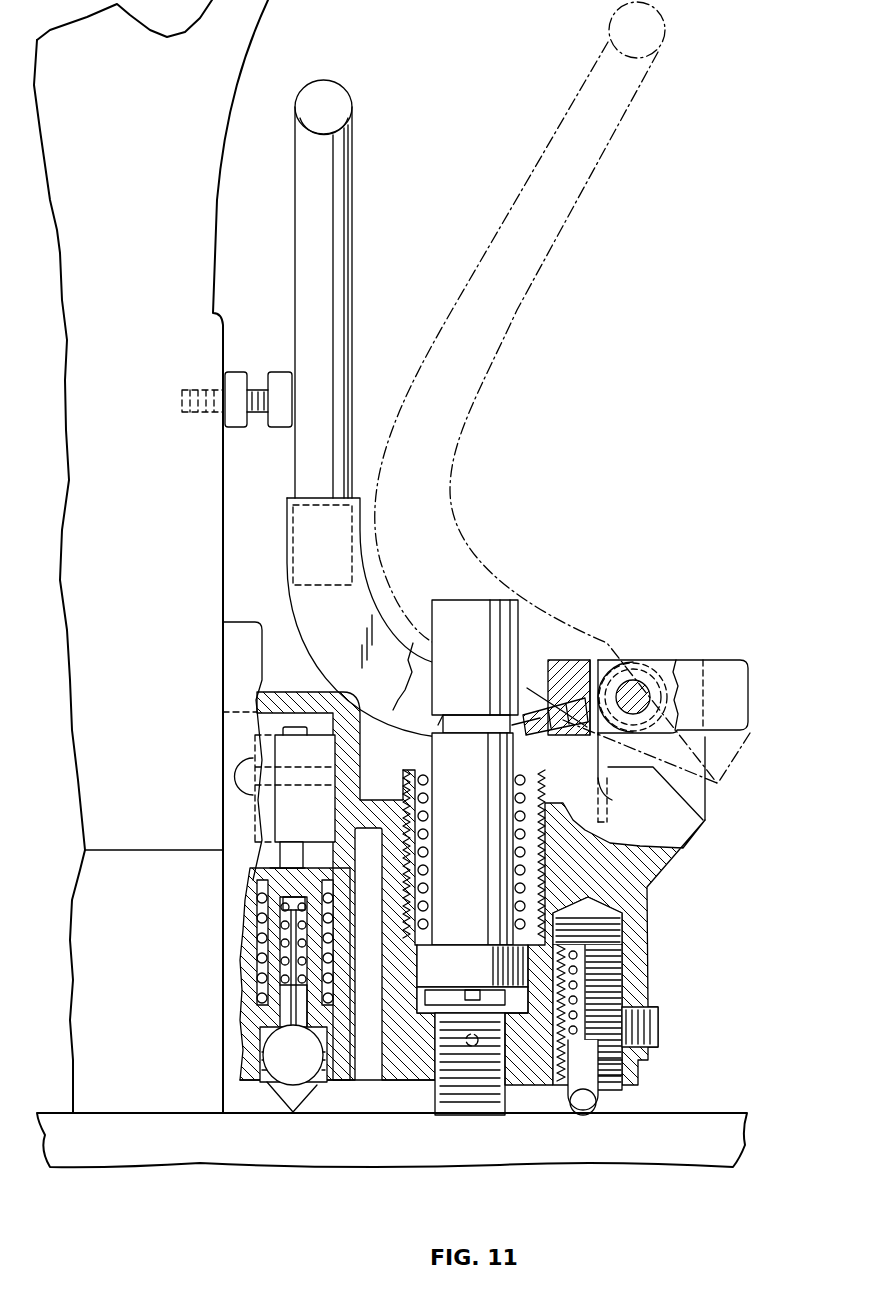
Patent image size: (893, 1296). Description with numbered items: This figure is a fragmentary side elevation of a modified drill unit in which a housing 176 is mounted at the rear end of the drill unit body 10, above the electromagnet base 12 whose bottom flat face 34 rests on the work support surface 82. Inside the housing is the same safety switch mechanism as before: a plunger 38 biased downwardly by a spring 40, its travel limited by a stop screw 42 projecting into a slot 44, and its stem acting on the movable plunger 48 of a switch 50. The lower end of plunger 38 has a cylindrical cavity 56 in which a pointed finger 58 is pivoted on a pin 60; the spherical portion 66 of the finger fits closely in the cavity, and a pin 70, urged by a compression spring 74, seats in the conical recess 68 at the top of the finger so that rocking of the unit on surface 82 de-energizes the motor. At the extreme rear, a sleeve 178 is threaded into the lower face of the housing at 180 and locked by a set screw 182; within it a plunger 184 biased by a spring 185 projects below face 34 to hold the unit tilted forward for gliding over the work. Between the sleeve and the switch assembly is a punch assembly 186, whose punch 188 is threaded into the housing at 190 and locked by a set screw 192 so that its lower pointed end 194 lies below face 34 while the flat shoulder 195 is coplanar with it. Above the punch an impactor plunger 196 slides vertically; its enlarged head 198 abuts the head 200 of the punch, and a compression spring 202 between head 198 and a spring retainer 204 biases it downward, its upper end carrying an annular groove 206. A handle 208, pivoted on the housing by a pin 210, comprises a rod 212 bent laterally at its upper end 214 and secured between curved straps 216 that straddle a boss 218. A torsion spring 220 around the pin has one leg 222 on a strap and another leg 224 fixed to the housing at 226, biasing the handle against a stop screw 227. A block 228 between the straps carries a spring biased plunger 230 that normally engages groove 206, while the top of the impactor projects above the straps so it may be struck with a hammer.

The main body 10 is at (218, 222).
The electromagnet base 12 is at (135, 866).
The bottom flat face 34 is at (163, 1115).
The plunger 38 is at (332, 1012).
The spring 40 is at (257, 900).
The stop screw 42 is at (333, 1038).
The slot 44 is at (333, 1068).
The movable plunger of switch 48 is at (285, 852).
The switch 50 is at (285, 784).
The cylindrical cavity 56 is at (262, 1018).
The finger 58 is at (310, 1092).
The pin 60 is at (260, 1068).
The spherical portion 66 is at (323, 1075).
The conical recess 68 is at (262, 1050).
The pin 70 is at (267, 1005).
The compression spring 74 is at (285, 930).
The work support surface 82 is at (255, 1115).
The housing 176 is at (656, 921).
The sleeve 178 is at (622, 968).
The threaded connection 180 is at (622, 1065).
The set screw 182 is at (660, 1012).
The plunger 184 is at (600, 1108).
The spring 185 is at (585, 952).
The punch assembly 186 is at (508, 570).
The punch 188 is at (505, 1087).
The threaded connection 190 is at (432, 1078).
The set screw 192 is at (472, 966).
The lower pointed end 194 is at (475, 1115).
The flat shoulder 195 is at (452, 1115).
The impactor plunger 196 is at (435, 757).
The enlarged head 198 is at (465, 945).
The head 200 is at (440, 995).
The compression spring 202 is at (432, 812).
The spring retainer 204 is at (432, 780).
The annular groove 206 is at (452, 722).
The handle 208 is at (358, 275).
The pin 210 is at (630, 683).
The rod 212 is at (354, 216).
The laterally bent upper end 214 is at (340, 93).
The curved straps 216 is at (299, 600).
The boss 218 is at (662, 660).
The torsion spring 220 is at (691, 752).
The spring leg 222 is at (562, 660).
The spring leg 224 is at (605, 792).
The securing location 226 is at (605, 817).
The stop screw 227 is at (275, 372).
The block 228 is at (576, 660).
The spring biased plunger 230 is at (571, 733).